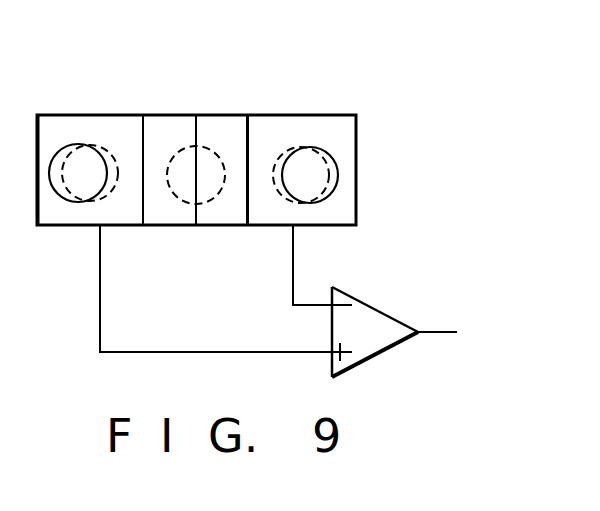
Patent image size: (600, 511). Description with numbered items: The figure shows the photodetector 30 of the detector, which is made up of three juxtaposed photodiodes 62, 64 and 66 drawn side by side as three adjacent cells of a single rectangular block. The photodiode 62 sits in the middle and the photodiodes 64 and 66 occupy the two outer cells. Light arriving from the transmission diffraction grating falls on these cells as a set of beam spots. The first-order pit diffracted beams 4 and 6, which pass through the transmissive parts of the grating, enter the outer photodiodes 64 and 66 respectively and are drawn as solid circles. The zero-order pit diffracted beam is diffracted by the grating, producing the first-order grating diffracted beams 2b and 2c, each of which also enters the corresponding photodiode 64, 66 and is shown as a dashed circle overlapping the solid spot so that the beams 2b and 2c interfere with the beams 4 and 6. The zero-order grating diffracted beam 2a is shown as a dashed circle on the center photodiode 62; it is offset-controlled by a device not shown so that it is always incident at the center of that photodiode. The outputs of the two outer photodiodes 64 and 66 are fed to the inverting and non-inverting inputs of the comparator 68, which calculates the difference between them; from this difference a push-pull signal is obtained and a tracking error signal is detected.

The photodetector 30 is at (232, 97).
The 0-order grating diffracted beam 2a is at (197, 116).
The ±1st-order grating diffracted beam 2b is at (100, 145).
The ±1st-order grating diffracted beam 2c is at (303, 147).
The ±1st-order diffracted beam 4 is at (62, 201).
The ±1st-order diffracted beam 6 is at (321, 203).
The photodiode 62 is at (170, 216).
The photodiode 64 is at (62, 128).
The photodiode 66 is at (271, 216).
The comparator 68 is at (384, 321).